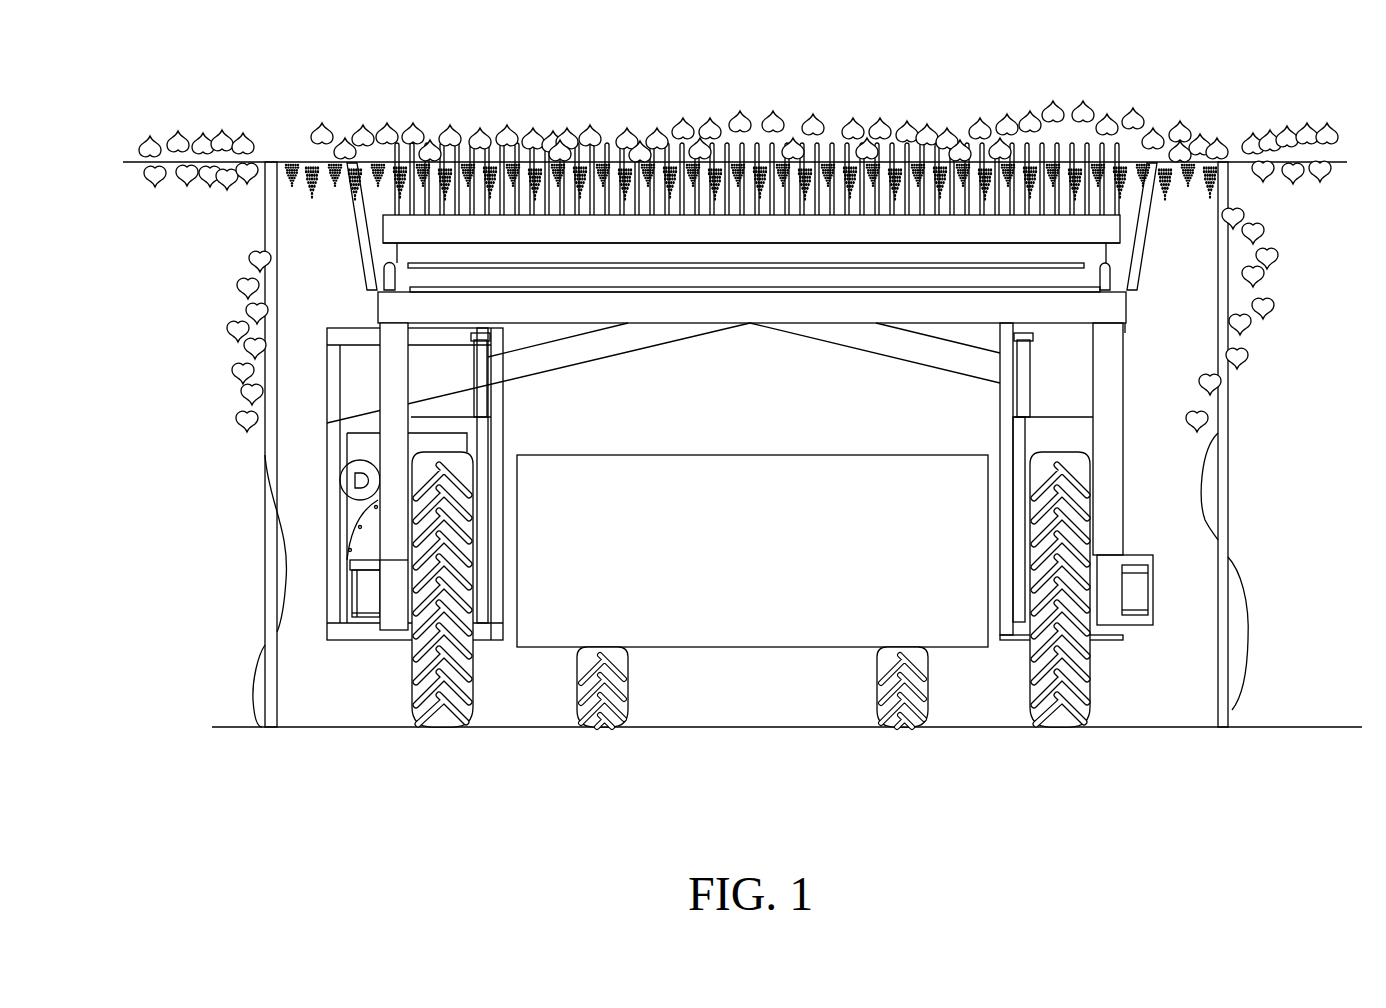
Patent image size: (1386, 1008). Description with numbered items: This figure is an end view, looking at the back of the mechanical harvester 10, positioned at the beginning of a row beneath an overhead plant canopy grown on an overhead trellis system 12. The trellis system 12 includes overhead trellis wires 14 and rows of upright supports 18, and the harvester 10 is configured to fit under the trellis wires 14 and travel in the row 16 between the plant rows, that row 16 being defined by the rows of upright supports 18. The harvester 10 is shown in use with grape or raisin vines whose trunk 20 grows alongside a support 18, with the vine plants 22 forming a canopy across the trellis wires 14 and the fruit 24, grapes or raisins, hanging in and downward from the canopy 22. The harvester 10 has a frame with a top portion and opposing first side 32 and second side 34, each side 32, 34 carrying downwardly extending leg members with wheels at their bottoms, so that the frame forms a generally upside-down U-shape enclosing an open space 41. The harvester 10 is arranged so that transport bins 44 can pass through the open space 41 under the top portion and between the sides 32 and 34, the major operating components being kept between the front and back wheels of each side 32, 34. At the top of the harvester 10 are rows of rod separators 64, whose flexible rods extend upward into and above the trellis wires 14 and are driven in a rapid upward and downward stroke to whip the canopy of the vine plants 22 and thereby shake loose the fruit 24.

The mechanical harvester 10 is at (350, 293).
The overhead trellis system 12 is at (1285, 112).
The trellis wires 14 is at (138, 163).
The row 16 is at (1183, 327).
The upright supports 18 is at (1225, 535).
The trunk 20 is at (1245, 608).
The vine plants 22 is at (1055, 102).
The fruit 24 is at (313, 197).
The first side 32 is at (312, 478).
The second side 34 is at (1132, 483).
The open space 41 is at (972, 427).
The transport bins 44 is at (580, 472).
The rod separators 64 is at (780, 207).